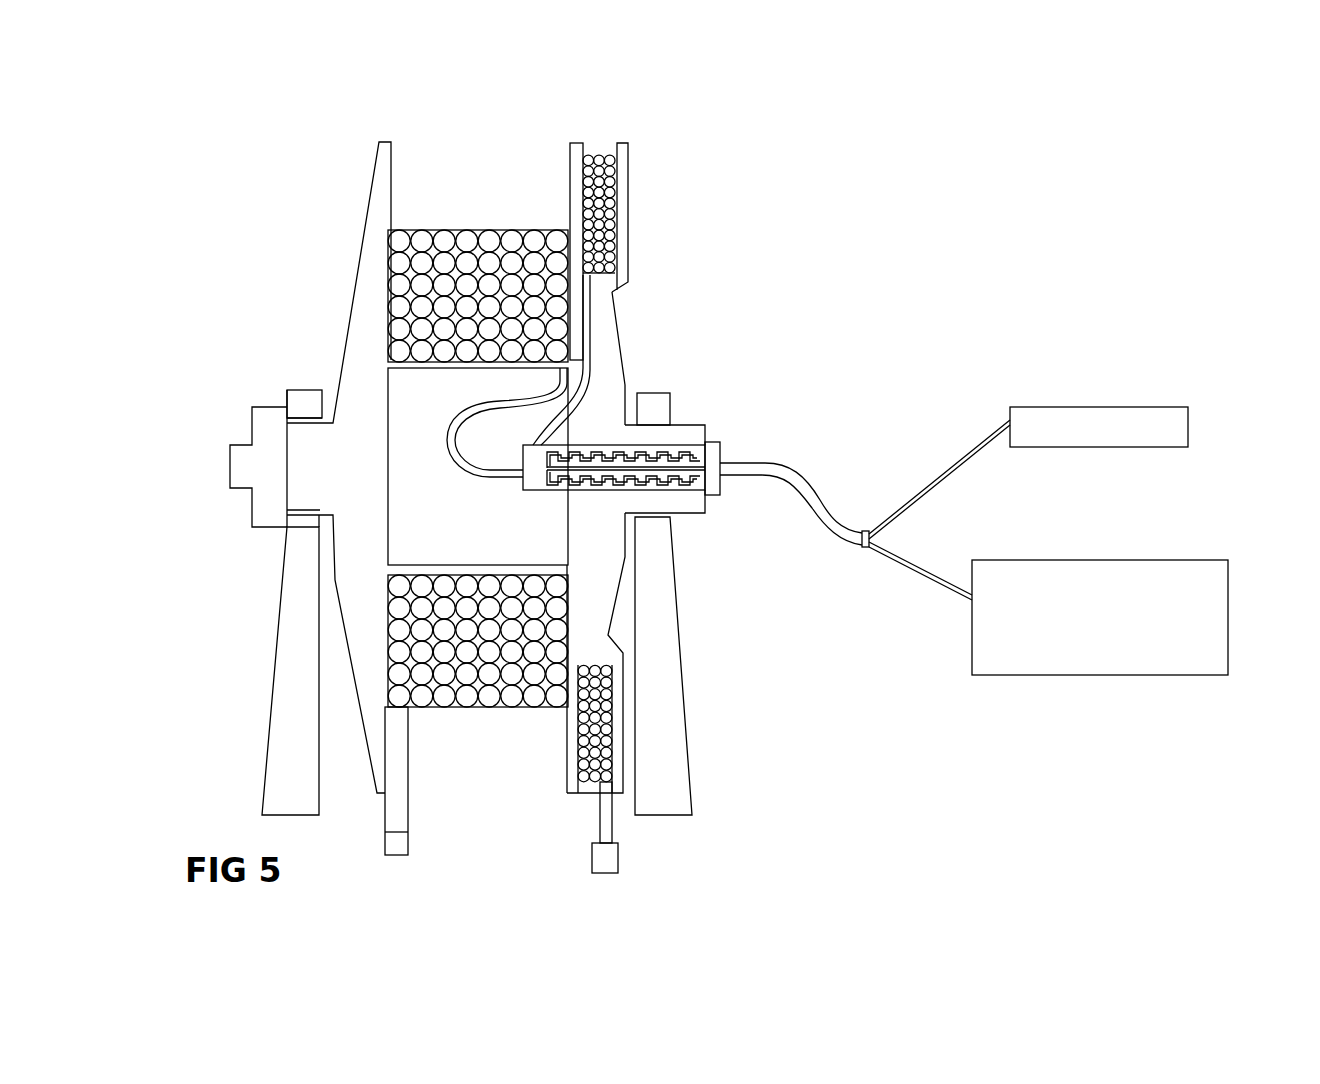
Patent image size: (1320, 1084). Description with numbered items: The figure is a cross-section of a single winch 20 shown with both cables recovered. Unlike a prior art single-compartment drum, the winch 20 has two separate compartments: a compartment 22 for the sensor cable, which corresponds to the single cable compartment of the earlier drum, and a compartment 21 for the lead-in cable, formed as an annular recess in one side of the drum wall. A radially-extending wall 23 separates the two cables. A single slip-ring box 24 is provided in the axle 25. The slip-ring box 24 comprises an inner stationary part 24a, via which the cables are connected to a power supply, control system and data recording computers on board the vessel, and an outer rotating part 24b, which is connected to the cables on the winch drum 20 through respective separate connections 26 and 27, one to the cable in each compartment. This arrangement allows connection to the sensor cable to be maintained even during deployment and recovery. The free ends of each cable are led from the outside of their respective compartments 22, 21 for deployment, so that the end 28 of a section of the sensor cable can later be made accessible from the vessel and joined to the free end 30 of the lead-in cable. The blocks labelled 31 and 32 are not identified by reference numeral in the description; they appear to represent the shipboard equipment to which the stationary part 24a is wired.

The winch 20 is at (597, 542).
The compartment for the lead-in cable 21 is at (606, 210).
The compartment for the sensor cable 22 is at (497, 231).
The radially-extending wall 23 is at (566, 751).
The slip-ring box 24 is at (694, 443).
The inner stationary part 24a is at (714, 452).
The outer rotating part 24b is at (685, 485).
The axle 25 is at (686, 437).
The connection 26 is at (558, 388).
The connection 27 is at (597, 291).
The end of sensor cable section 28 is at (410, 846).
The free end of lead-in cable 30 is at (621, 858).
The control unit 31 is at (1097, 407).
The power supply 32 is at (1138, 560).